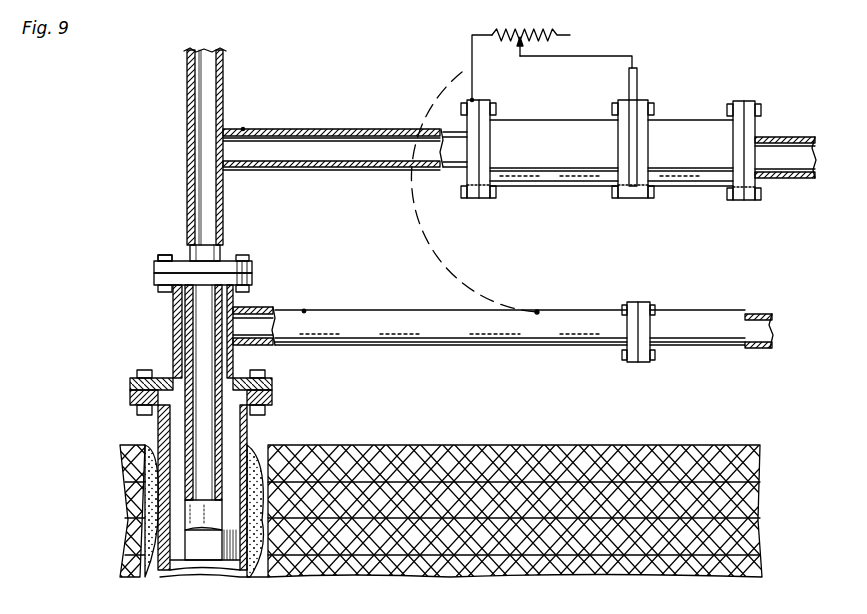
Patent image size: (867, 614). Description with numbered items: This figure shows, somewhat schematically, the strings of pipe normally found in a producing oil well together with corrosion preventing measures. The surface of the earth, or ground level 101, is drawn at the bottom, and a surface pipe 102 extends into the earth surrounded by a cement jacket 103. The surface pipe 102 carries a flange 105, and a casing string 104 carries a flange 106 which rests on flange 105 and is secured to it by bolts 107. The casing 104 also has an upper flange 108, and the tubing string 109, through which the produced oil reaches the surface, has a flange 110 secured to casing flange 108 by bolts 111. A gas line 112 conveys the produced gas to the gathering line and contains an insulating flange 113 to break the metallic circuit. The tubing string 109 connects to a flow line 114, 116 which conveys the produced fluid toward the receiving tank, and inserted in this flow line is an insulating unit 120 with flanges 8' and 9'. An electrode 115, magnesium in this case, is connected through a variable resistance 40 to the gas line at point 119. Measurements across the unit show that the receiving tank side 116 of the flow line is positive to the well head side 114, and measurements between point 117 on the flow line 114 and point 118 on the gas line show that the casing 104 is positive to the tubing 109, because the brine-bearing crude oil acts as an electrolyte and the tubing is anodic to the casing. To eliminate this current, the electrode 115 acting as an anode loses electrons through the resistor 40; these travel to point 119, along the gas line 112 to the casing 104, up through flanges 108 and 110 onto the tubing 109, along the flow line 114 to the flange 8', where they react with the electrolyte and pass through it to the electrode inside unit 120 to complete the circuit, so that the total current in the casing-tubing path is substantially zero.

The variable resistance 40 is at (520, 36).
The point on flow line 117 is at (243, 128).
The flow line 114 is at (305, 128).
The flange 8' is at (488, 135).
The electrode 115 is at (637, 87).
The insulating unit 120 is at (572, 112).
The flange 9' is at (739, 135).
The flow line 116 is at (770, 145).
The tubing string 109 is at (225, 222).
The flange 110 is at (252, 264).
The flange 108 is at (252, 279).
The bolts 111 is at (163, 250).
The point on gas line 118 is at (305, 310).
The point on gas line 119 is at (538, 311).
The insulating flange 113 is at (648, 302).
The gas line 112 is at (455, 332).
The casing string 104 is at (233, 366).
The flange 106 is at (272, 384).
The flange 105 is at (272, 397).
The bolts 107 is at (142, 366).
The surface pipe 102 is at (247, 432).
The cement jacket 103 is at (265, 472).
The ground level 101 is at (470, 445).